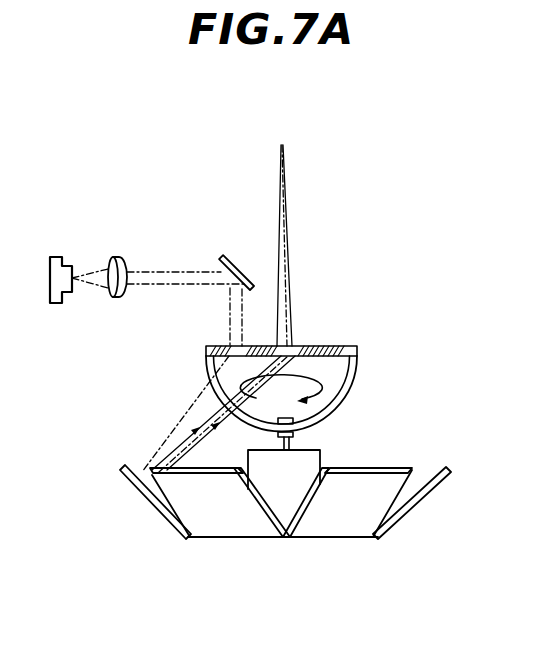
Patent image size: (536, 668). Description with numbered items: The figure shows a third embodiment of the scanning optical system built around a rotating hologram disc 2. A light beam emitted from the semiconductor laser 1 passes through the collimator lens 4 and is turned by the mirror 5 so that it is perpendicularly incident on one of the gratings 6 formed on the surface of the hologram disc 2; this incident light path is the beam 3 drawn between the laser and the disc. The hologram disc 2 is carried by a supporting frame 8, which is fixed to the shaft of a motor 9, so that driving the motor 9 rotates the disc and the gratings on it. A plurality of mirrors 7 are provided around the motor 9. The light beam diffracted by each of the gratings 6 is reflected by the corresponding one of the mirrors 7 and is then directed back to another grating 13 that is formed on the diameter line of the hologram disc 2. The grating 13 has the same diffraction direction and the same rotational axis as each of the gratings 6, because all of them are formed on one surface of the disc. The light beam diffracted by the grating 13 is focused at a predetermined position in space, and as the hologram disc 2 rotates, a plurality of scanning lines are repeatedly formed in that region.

The semiconductor laser 1 is at (52, 256).
The hologram disc 2 is at (348, 346).
The laser beam 3 is at (172, 250).
The collimator lens 4 is at (110, 256).
The mirror 5 is at (232, 257).
The grating 6 is at (323, 346).
The mirrors 7 is at (170, 528).
The supporting frame 8 is at (352, 386).
The motor 9 is at (318, 463).
The grating 13 is at (298, 346).